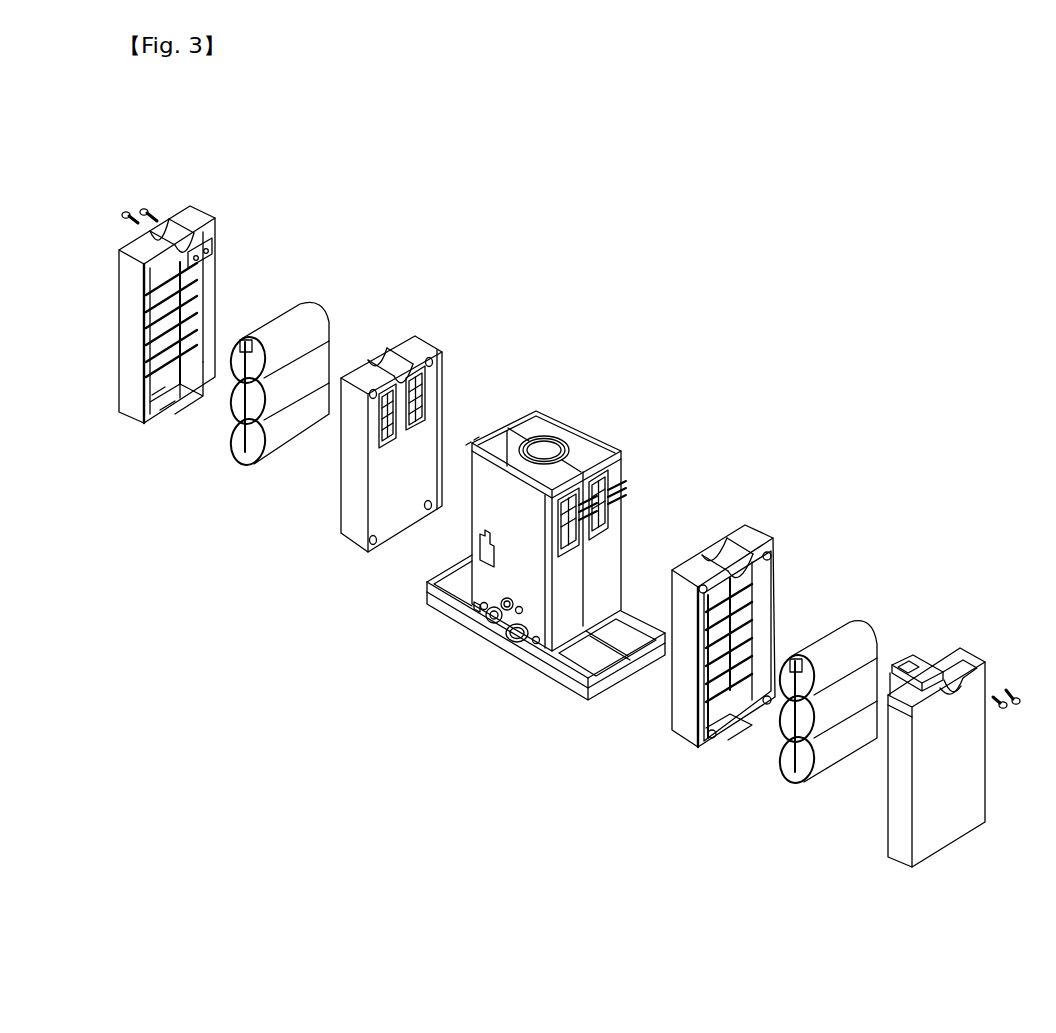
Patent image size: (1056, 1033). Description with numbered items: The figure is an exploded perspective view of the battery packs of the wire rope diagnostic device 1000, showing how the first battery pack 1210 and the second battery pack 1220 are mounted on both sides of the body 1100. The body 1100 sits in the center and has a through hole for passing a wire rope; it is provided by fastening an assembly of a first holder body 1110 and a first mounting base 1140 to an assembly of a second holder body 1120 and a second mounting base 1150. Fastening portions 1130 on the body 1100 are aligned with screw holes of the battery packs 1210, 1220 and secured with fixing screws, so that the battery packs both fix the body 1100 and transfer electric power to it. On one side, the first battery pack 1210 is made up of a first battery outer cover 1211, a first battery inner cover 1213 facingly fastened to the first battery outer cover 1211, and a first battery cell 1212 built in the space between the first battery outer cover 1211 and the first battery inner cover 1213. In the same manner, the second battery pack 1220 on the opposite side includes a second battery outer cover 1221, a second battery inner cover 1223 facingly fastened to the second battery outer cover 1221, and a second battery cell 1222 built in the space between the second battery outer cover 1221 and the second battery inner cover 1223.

The wire rope diagnostic device 1000 is at (710, 216).
The body 1100 is at (745, 339).
The first holder body 1110 is at (511, 426).
The second holder body 1120 is at (590, 440).
The fastening portions 1130 is at (590, 482).
The first mounting base 1140 is at (437, 577).
The second mounting base 1150 is at (626, 620).
The first battery pack 1210 is at (360, 126).
The first battery outer cover 1211 is at (190, 217).
The first battery cell 1212 is at (283, 325).
The first battery inner cover 1213 is at (410, 345).
The second battery pack 1220 is at (992, 444).
The second battery outer cover 1221 is at (965, 655).
The second battery cell 1222 is at (848, 640).
The second battery inner cover 1223 is at (757, 535).